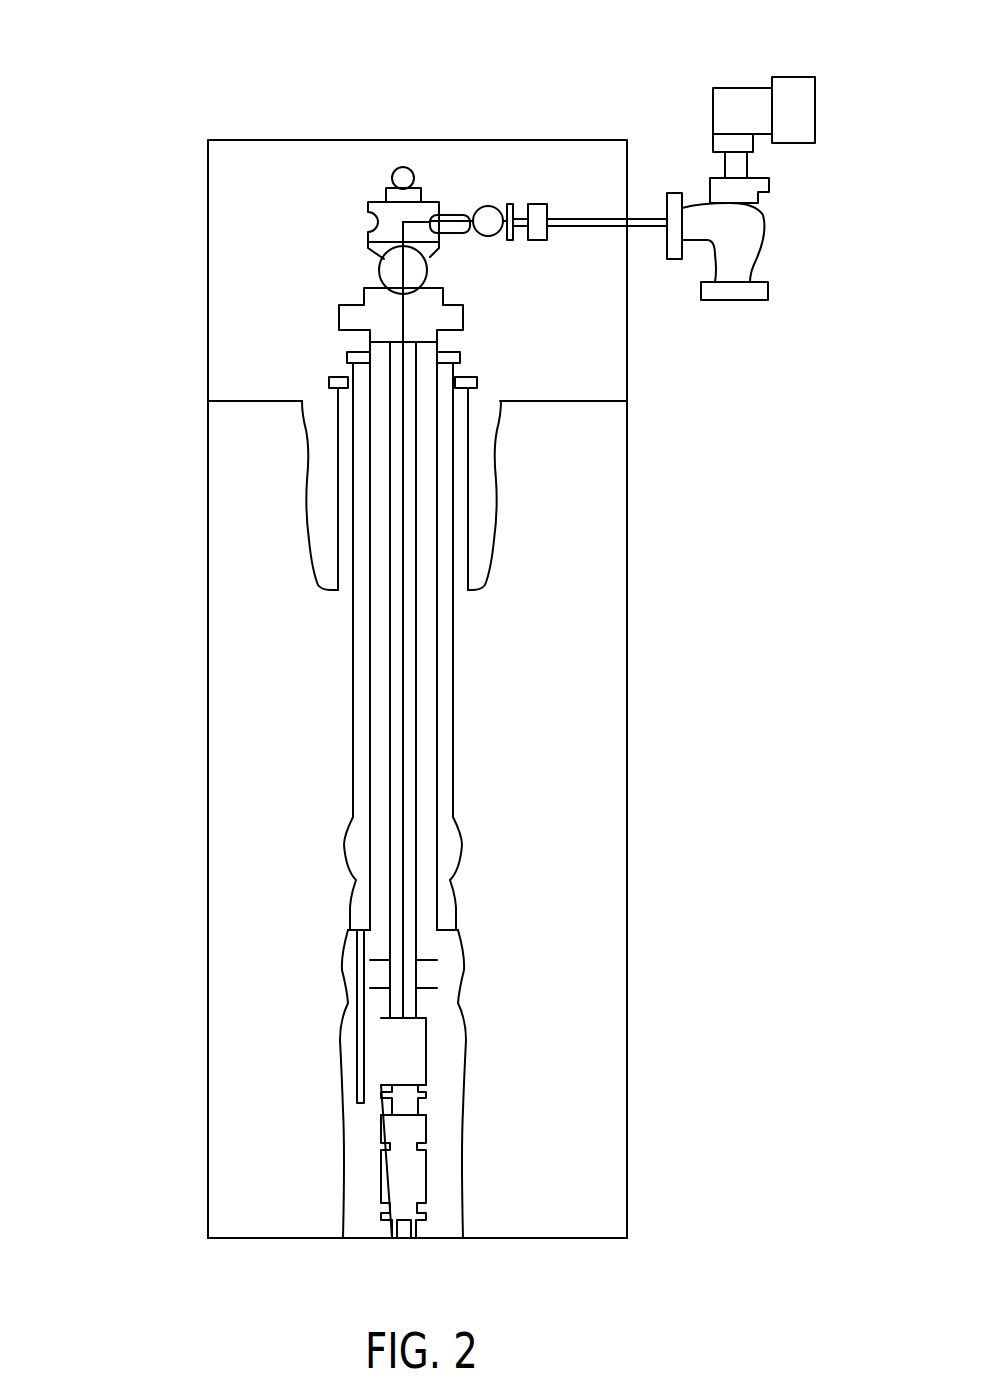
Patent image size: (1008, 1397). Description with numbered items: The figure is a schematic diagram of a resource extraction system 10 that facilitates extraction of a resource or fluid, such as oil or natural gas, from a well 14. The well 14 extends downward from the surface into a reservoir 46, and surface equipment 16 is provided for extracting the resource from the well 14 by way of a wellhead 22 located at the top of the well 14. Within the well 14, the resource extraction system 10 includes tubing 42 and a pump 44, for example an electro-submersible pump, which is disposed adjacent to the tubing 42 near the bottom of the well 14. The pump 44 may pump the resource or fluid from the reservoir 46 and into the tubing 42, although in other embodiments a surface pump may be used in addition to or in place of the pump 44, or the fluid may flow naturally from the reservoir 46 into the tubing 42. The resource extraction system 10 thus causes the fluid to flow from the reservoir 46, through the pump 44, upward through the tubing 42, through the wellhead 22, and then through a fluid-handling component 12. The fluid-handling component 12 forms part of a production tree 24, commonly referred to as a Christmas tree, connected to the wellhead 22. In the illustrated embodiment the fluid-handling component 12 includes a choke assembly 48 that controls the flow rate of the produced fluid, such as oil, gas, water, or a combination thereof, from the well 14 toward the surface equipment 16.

The resource extraction system 10 is at (160, 38).
The fluid-handling component 12 is at (702, 170).
The well 14 is at (297, 698).
The surface equipment 16 is at (188, 99).
The wellhead 22 is at (372, 188).
The production tree 24 is at (823, 157).
The tubing 42 is at (388, 825).
The pump 44 is at (392, 1177).
The reservoir 46 is at (619, 1282).
The choke assembly 48 is at (765, 232).